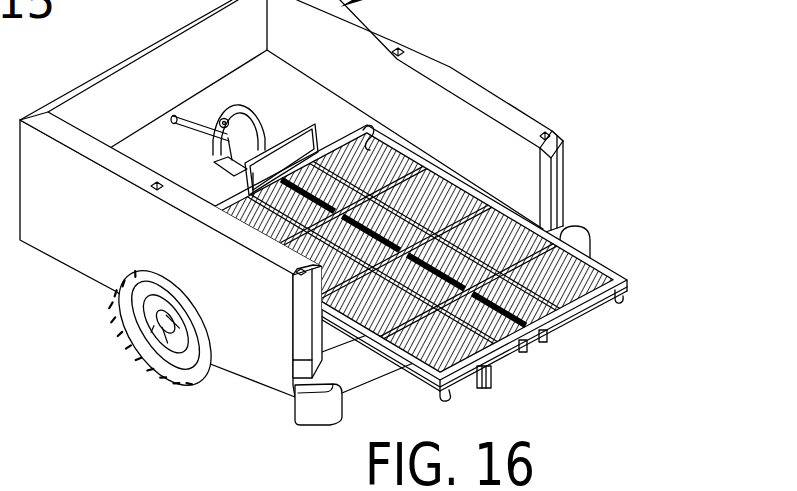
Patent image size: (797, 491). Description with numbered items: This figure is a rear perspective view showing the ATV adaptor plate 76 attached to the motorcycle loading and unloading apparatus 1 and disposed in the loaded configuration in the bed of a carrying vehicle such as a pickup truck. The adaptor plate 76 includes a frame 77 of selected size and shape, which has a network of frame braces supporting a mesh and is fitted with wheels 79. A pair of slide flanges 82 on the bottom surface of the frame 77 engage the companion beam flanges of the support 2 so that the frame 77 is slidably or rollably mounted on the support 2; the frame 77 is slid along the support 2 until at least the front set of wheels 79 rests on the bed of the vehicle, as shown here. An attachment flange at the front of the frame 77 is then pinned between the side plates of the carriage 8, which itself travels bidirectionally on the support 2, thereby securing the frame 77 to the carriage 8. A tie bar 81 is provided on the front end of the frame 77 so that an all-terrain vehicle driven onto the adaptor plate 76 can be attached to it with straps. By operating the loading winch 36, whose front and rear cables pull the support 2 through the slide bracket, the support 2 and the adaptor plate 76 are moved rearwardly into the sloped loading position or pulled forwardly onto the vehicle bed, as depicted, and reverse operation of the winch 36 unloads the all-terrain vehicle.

The motorcycle loading and unloading apparatus 1 is at (232, 77).
The support 2 is at (214, 165).
The carriage 8 is at (258, 112).
The loading winch 36 is at (186, 134).
The ATV adaptor plate 76 is at (435, 261).
The frame 77 is at (444, 150).
The wheels 79 is at (617, 305).
The tie bar 81 is at (292, 143).
The slide flanges 82 is at (525, 350).